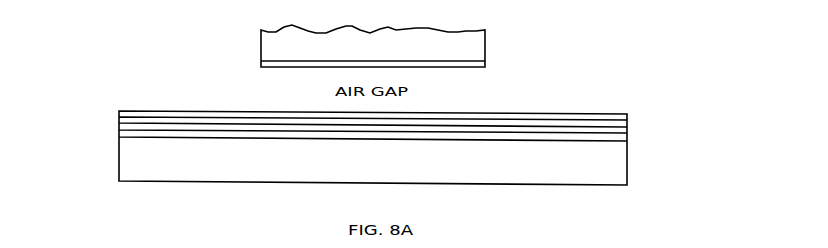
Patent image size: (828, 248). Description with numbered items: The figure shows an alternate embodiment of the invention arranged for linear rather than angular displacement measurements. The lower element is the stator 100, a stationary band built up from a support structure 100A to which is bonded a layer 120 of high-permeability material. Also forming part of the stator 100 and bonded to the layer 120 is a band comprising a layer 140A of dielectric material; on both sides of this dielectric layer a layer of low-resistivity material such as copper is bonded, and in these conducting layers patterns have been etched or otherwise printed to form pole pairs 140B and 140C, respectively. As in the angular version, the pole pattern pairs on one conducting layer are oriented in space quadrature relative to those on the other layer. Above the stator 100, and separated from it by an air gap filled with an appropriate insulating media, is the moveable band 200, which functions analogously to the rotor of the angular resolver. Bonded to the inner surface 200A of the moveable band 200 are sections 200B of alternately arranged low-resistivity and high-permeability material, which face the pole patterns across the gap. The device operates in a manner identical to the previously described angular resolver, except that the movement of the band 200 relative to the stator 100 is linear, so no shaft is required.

The stator 100 is at (403, 138).
The support structure 100A is at (373, 161).
The layer of high-permeability material 120 is at (119, 137).
The layer of dielectric material 140A is at (119, 122).
The pole pairs 140B is at (119, 112).
The pole pairs 140C is at (119, 128).
The moveable band 200 is at (509, 51).
The inner surface 200A is at (373, 43).
The sections 200B is at (486, 67).